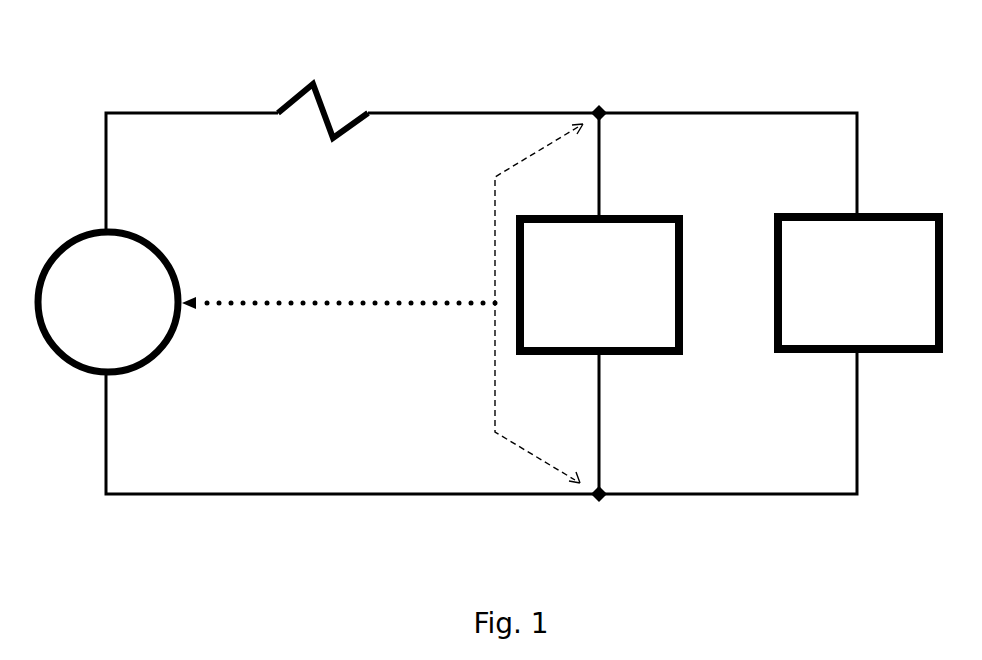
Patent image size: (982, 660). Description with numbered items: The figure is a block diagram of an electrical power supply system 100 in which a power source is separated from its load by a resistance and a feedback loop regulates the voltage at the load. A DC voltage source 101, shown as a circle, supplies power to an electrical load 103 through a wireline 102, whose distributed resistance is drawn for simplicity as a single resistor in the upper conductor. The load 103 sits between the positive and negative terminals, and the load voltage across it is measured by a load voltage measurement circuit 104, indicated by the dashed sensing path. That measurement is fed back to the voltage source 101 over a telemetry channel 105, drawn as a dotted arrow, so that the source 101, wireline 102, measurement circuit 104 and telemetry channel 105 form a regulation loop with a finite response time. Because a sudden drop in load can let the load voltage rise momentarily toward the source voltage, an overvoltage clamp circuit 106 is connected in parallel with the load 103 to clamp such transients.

The system 100 is at (763, 80).
The DC voltage source 101 is at (158, 245).
The wireline 102 is at (326, 99).
The electrical load 103 is at (599, 285).
The load voltage measurement circuit 104 is at (495, 234).
The telemetry channel 105 is at (339, 306).
The overvoltage clamp circuit 106 is at (858, 283).